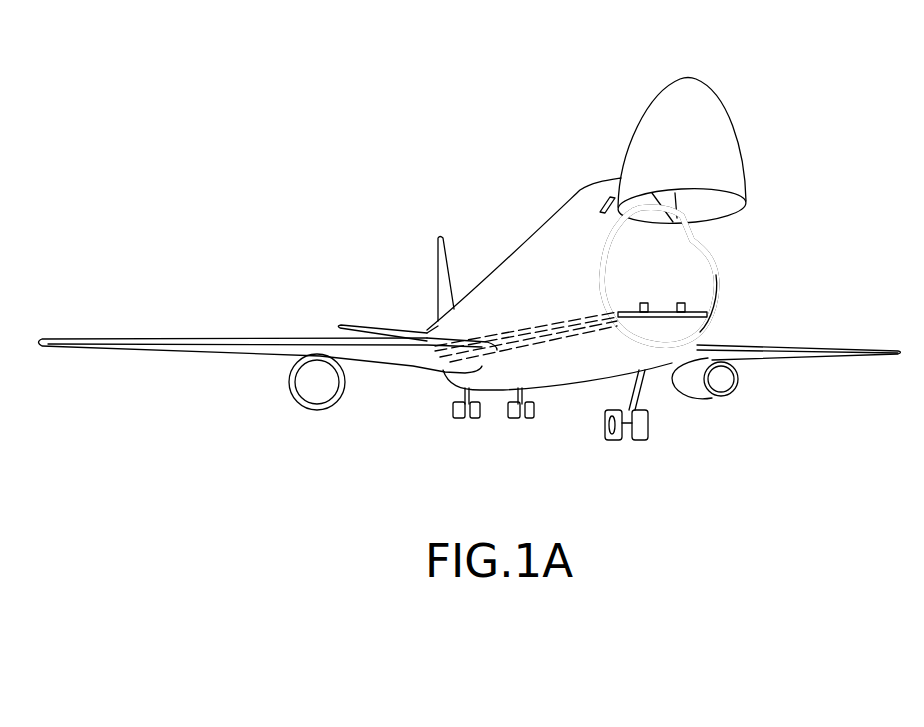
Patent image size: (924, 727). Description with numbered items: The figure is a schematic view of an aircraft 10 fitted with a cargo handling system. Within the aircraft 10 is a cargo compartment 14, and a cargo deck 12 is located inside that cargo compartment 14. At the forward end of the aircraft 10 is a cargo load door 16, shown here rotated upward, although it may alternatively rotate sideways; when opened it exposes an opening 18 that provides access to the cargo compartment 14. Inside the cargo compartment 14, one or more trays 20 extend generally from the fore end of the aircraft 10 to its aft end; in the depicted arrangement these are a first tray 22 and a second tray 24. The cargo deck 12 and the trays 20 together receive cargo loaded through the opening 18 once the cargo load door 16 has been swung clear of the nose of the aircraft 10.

The aircraft 10 is at (448, 116).
The cargo deck 12 is at (709, 312).
The cargo compartment 14 is at (681, 253).
The cargo load door 16 is at (713, 100).
The opening 18 is at (728, 251).
The trays 20 is at (651, 285).
The first tray 22 is at (684, 304).
The second tray 24 is at (628, 308).